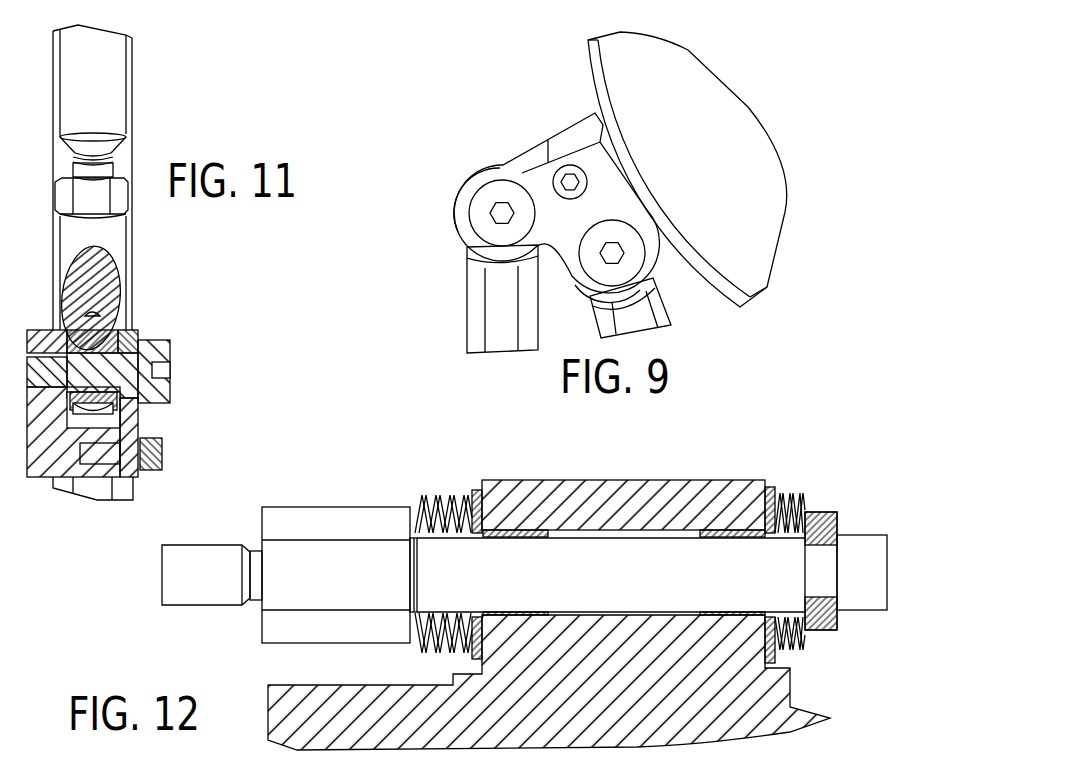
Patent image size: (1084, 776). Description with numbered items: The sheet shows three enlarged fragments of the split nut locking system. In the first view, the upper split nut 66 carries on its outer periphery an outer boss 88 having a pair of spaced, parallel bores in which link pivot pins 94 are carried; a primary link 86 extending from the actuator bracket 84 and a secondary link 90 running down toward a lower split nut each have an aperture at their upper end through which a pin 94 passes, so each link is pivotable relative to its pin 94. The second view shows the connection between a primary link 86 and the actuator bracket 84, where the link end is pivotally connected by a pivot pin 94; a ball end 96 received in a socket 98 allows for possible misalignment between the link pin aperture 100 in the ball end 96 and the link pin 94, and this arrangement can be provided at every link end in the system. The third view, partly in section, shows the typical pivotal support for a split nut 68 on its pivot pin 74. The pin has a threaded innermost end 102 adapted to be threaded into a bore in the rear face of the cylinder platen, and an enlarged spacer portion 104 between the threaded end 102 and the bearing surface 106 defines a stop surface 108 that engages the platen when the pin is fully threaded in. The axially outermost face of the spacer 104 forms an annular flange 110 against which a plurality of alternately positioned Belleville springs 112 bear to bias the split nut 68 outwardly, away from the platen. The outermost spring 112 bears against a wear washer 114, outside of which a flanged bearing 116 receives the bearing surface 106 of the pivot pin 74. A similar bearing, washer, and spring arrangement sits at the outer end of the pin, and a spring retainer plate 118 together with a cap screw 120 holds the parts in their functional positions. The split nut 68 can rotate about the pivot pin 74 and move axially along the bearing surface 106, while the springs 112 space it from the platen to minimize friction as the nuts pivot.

In FIG. 9, the upper split nut 66 is at (732, 124).
In FIG. 12, the split nut 68 is at (788, 712).
In FIG. 12, the pivot pin 74 is at (635, 555).
In FIG. 11, the actuator bracket 84 is at (38, 463).
In FIG. 11, the primary link 86 is at (108, 102).
In FIG. 9, the primary link 86 is at (642, 318).
In FIG. 9, the outer boss 88 is at (540, 188).
In FIG. 9, the secondary link 90 is at (502, 310).
In FIG. 11, the link pivot pin 94 is at (160, 390).
In FIG. 11, the ball end 96 is at (100, 330).
In FIG. 11, the socket 98 is at (100, 413).
In FIG. 11, the link pin aperture 100 is at (152, 360).
In FIG. 12, the threaded innermost end 102 is at (203, 595).
In FIG. 12, the spacer portion 104 is at (275, 631).
In FIG. 12, the bearing surface 106 is at (600, 512).
In FIG. 12, the stop surface 108 is at (262, 522).
In FIG. 12, the annular flange 110 is at (413, 503).
In FIG. 12, the Belleville springs 112 is at (448, 642).
In FIG. 12, the wear washer 114 is at (472, 497).
In FIG. 12, the flanged bearing 116 is at (507, 538).
In FIG. 12, the spring retainer plate 118 is at (823, 510).
In FIG. 12, the cap screw 120 is at (873, 603).